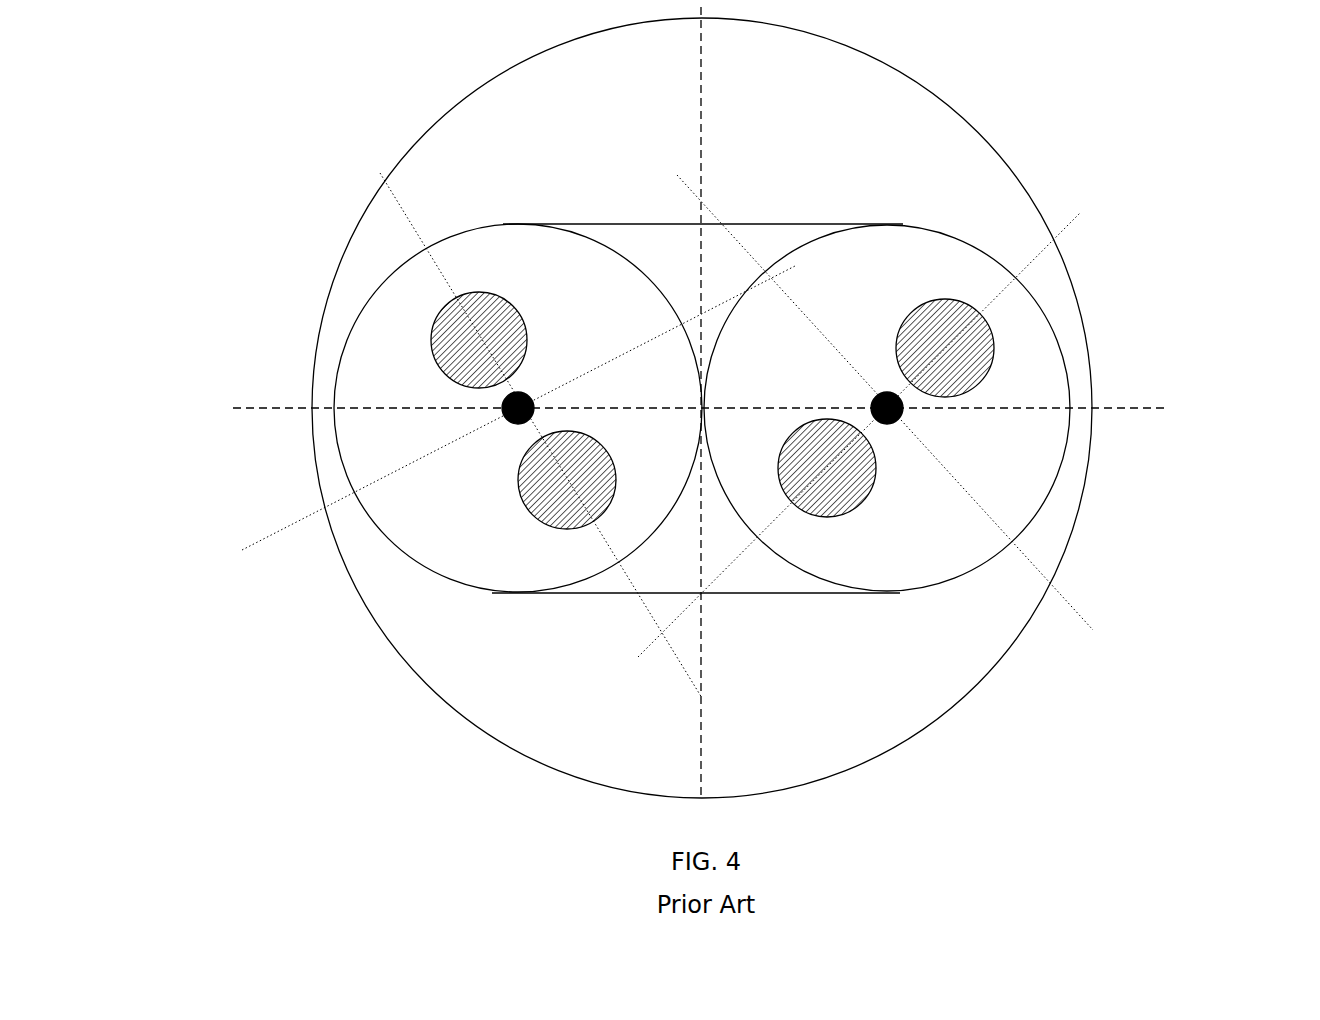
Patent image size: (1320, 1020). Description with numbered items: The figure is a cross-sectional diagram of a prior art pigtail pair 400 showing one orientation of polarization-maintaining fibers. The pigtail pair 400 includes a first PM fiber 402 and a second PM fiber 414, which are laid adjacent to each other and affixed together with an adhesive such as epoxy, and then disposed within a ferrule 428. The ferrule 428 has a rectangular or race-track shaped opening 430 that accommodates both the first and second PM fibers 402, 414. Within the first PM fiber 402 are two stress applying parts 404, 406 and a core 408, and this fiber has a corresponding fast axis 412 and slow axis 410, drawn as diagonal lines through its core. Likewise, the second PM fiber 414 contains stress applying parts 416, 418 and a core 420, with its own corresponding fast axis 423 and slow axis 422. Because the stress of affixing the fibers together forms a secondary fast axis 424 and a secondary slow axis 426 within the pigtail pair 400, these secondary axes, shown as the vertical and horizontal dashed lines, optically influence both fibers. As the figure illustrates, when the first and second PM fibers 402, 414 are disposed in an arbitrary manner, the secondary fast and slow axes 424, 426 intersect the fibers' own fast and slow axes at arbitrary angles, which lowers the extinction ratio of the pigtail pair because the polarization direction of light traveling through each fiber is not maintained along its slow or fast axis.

The pigtail pair 400 is at (306, 128).
The first PM fiber 402 is at (828, 224).
The stress applying part 404 is at (927, 300).
The stress applying part 406 is at (840, 537).
The core 408 is at (887, 427).
The slow axis 410 is at (1075, 208).
The fast axis 412 is at (1090, 630).
The second PM fiber 414 is at (513, 222).
The stress applying part 416 is at (525, 294).
The stress applying part 418 is at (572, 533).
The core 420 is at (513, 427).
The slow axis 422 is at (388, 197).
The fast axis 423 is at (245, 568).
The secondary fast axis 424 is at (693, 78).
The secondary slow axis 426 is at (1190, 408).
The ferrule 428 is at (327, 263).
The opening 430 is at (652, 222).